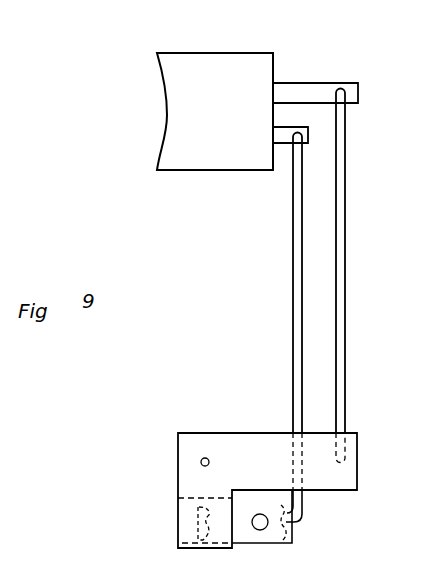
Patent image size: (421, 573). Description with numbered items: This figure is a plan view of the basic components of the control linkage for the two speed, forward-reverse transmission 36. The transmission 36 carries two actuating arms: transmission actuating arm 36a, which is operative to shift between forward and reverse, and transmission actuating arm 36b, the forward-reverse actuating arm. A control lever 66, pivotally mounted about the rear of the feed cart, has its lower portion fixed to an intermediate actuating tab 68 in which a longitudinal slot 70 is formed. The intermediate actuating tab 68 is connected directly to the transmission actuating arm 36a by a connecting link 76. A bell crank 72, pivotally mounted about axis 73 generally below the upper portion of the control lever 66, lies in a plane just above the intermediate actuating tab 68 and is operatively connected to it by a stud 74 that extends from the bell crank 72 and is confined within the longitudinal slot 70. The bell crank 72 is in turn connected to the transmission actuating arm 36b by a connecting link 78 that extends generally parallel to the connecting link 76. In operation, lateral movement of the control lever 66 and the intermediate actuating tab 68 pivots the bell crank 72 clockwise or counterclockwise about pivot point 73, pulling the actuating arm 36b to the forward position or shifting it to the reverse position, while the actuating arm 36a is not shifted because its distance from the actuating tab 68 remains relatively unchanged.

The forward-reverse transmission 36 is at (215, 111).
The transmission actuating arm 36a is at (288, 143).
The transmission actuating arm 36b is at (322, 87).
The control lever 66 is at (258, 526).
The intermediate actuating tab 68 is at (285, 540).
The longitudinal slot 70 is at (174, 548).
The bell crank 72 is at (267, 490).
The pivot axis 73 is at (207, 456).
The stud 74 is at (197, 523).
The connecting link 76 is at (292, 322).
The connecting link 78 is at (345, 323).